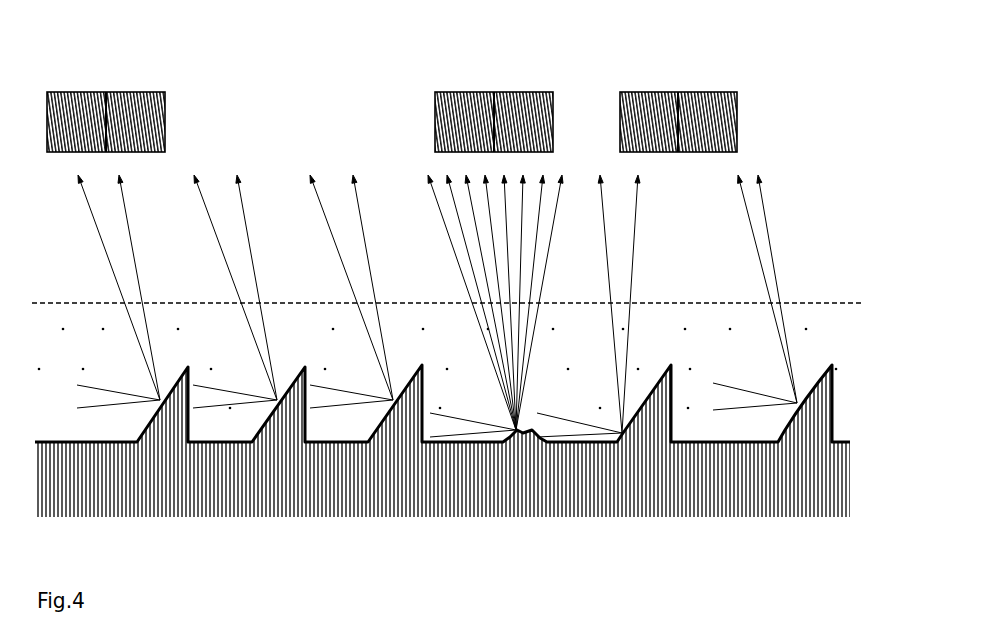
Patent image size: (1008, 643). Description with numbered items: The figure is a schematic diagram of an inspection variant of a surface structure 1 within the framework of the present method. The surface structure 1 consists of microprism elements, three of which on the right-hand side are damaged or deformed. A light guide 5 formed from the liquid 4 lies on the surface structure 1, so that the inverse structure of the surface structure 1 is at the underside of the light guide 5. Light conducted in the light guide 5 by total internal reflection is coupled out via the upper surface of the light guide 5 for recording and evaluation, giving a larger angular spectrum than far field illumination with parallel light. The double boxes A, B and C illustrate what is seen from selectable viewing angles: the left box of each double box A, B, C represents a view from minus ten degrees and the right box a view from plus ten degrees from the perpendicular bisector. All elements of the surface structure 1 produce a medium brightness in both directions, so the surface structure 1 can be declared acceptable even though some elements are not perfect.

The surface structure 1 is at (808, 438).
The liquid 4 is at (822, 356).
The light guide 5 is at (802, 303).
The double box A is at (104, 92).
The double box B is at (478, 92).
The double box C is at (683, 92).